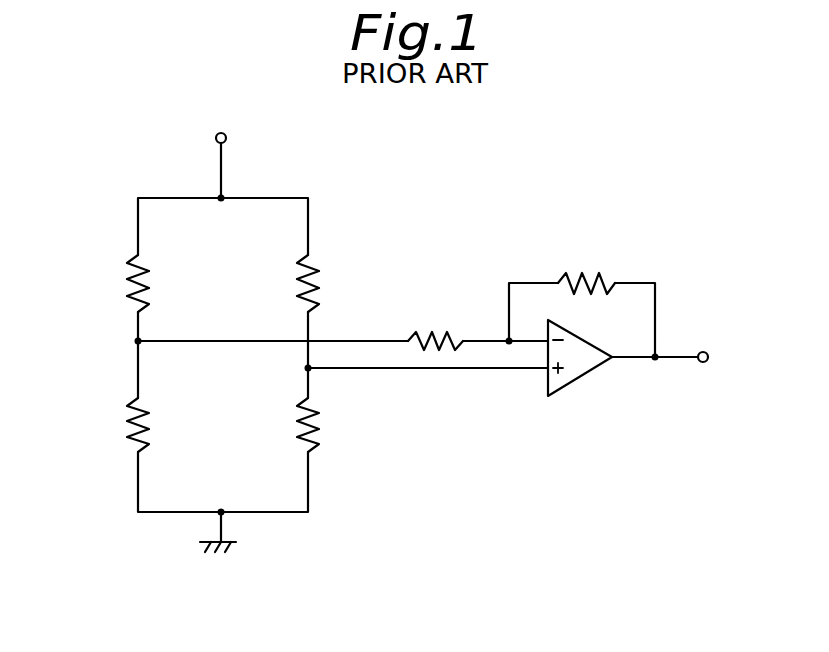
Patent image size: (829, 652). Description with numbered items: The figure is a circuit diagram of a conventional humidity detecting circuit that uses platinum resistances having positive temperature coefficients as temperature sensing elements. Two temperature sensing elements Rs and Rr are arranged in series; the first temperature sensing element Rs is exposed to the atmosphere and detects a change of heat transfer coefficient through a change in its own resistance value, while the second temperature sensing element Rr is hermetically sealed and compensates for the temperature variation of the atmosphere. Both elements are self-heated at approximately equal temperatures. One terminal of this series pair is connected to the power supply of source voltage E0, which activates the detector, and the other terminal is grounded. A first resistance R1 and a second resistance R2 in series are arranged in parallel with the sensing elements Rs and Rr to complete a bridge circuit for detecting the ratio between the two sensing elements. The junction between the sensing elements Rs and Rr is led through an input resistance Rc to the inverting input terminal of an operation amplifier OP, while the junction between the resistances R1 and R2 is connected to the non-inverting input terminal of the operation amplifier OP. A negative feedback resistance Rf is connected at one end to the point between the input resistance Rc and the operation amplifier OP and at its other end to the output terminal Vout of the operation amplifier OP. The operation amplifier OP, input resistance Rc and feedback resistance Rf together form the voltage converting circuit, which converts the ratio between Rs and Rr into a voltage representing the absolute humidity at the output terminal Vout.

The source voltage E0 is at (221, 148).
The second temperature sensing element Rr is at (123, 283).
The first resistance R1 is at (326, 283).
The first temperature sensing element Rs is at (122, 425).
The second resistance R2 is at (326, 425).
The input resistance Rc is at (435, 322).
The negative feedback resistance Rf is at (586, 265).
The operation amplifier OP is at (581, 350).
The output terminal Vout is at (676, 340).